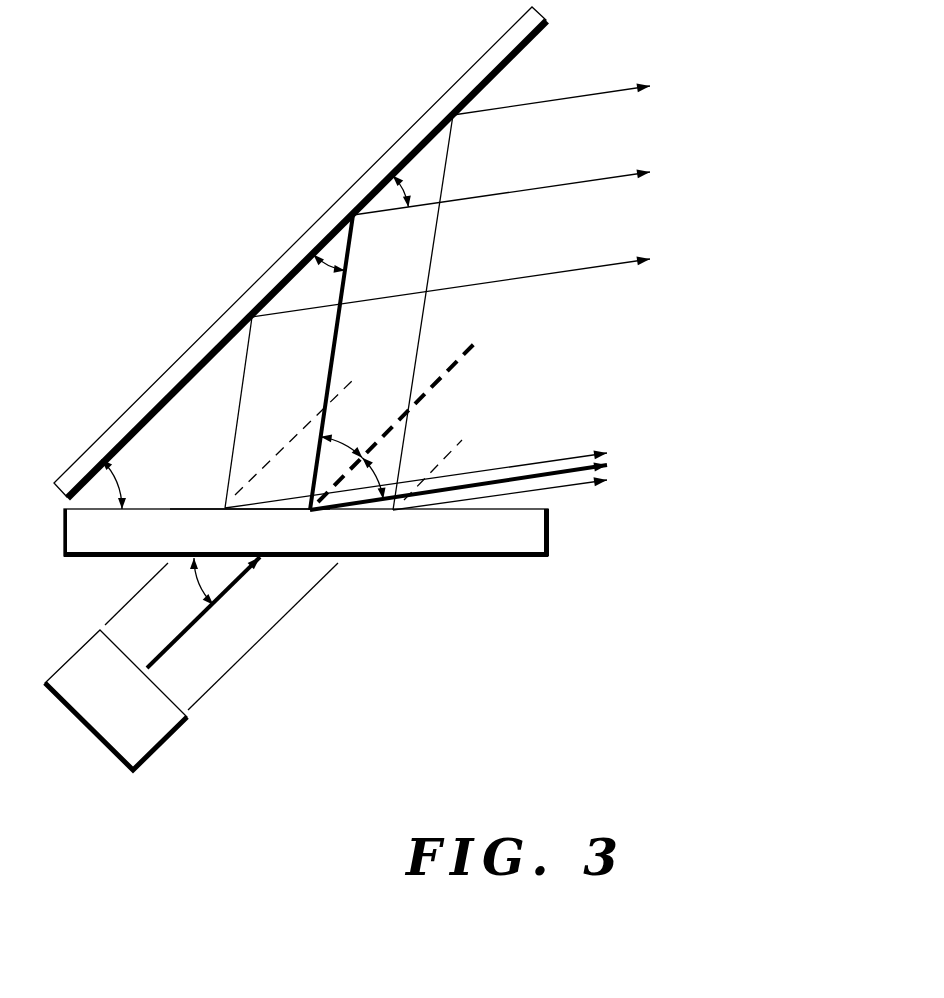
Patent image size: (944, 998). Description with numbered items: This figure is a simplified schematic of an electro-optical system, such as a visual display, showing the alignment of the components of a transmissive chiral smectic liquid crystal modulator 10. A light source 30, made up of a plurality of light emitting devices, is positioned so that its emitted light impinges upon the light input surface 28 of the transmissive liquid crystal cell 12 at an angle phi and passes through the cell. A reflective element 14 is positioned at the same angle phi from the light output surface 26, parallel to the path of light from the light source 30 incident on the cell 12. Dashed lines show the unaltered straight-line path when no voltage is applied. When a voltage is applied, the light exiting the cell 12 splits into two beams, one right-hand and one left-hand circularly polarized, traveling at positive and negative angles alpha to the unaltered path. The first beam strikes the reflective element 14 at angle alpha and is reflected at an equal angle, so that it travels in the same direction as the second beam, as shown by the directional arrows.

The modulator 10 is at (347, 403).
The liquid crystal cell 12 is at (484, 558).
The reflective element 14 is at (192, 348).
The light output surface 26 is at (185, 507).
The light input surface 28 is at (99, 559).
The light source 30 is at (157, 747).